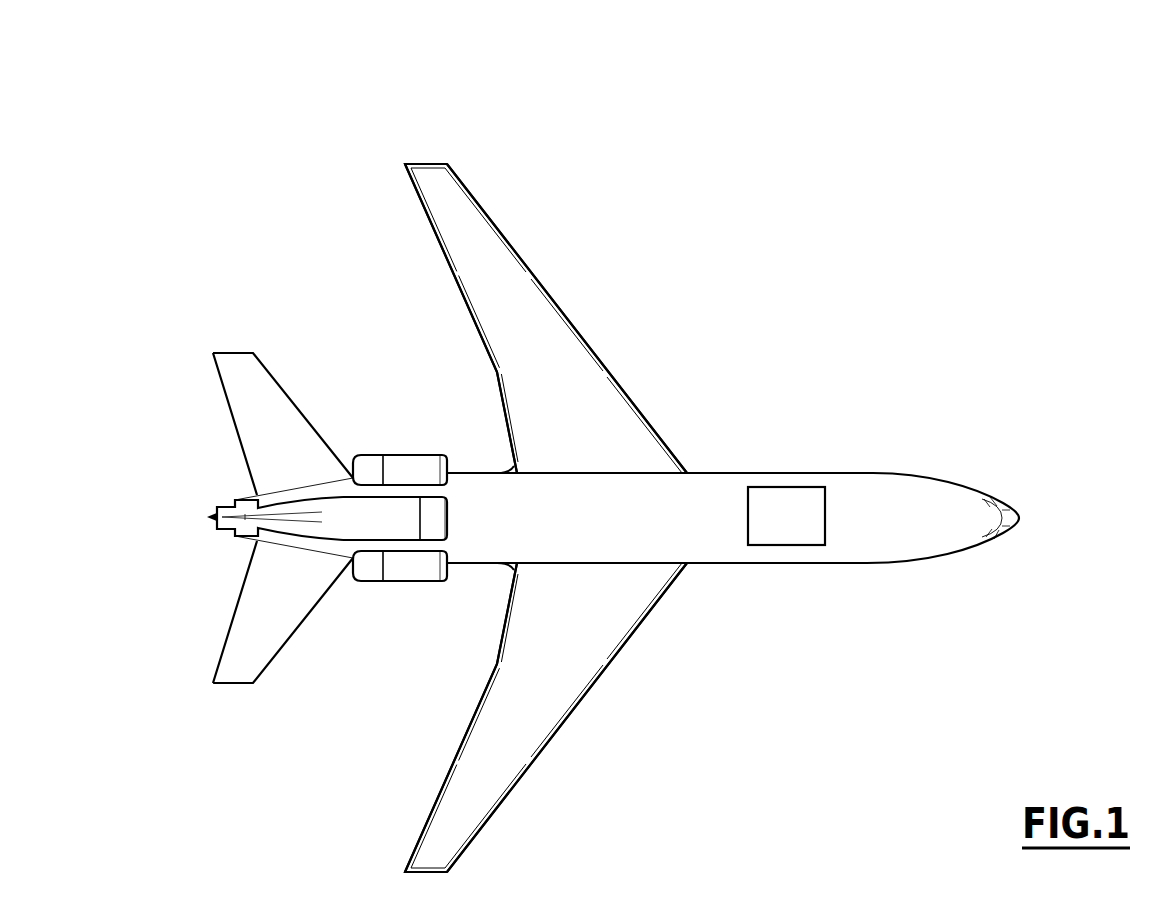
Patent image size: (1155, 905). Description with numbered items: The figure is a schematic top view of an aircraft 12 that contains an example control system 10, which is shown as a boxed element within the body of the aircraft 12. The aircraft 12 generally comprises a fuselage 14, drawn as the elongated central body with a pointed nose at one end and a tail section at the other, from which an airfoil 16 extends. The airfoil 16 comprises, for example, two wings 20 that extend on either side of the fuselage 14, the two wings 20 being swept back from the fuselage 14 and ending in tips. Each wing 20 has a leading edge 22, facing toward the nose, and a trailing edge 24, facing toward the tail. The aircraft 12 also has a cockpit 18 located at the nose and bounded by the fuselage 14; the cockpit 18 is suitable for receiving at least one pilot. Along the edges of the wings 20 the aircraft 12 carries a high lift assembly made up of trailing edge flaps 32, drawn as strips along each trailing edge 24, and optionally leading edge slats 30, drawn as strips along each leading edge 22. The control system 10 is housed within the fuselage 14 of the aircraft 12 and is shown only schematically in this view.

The control system 10 is at (800, 532).
The aircraft 12 is at (624, 487).
The fuselage 14 is at (814, 567).
The airfoil 16 is at (544, 183).
The cockpit 18 is at (964, 540).
The wing 20 is at (396, 156).
The leading edge 22 is at (497, 843).
The trailing edge 24 is at (428, 794).
The leading edge slats 30 is at (647, 405).
The trailing edge flaps 32 is at (490, 416).